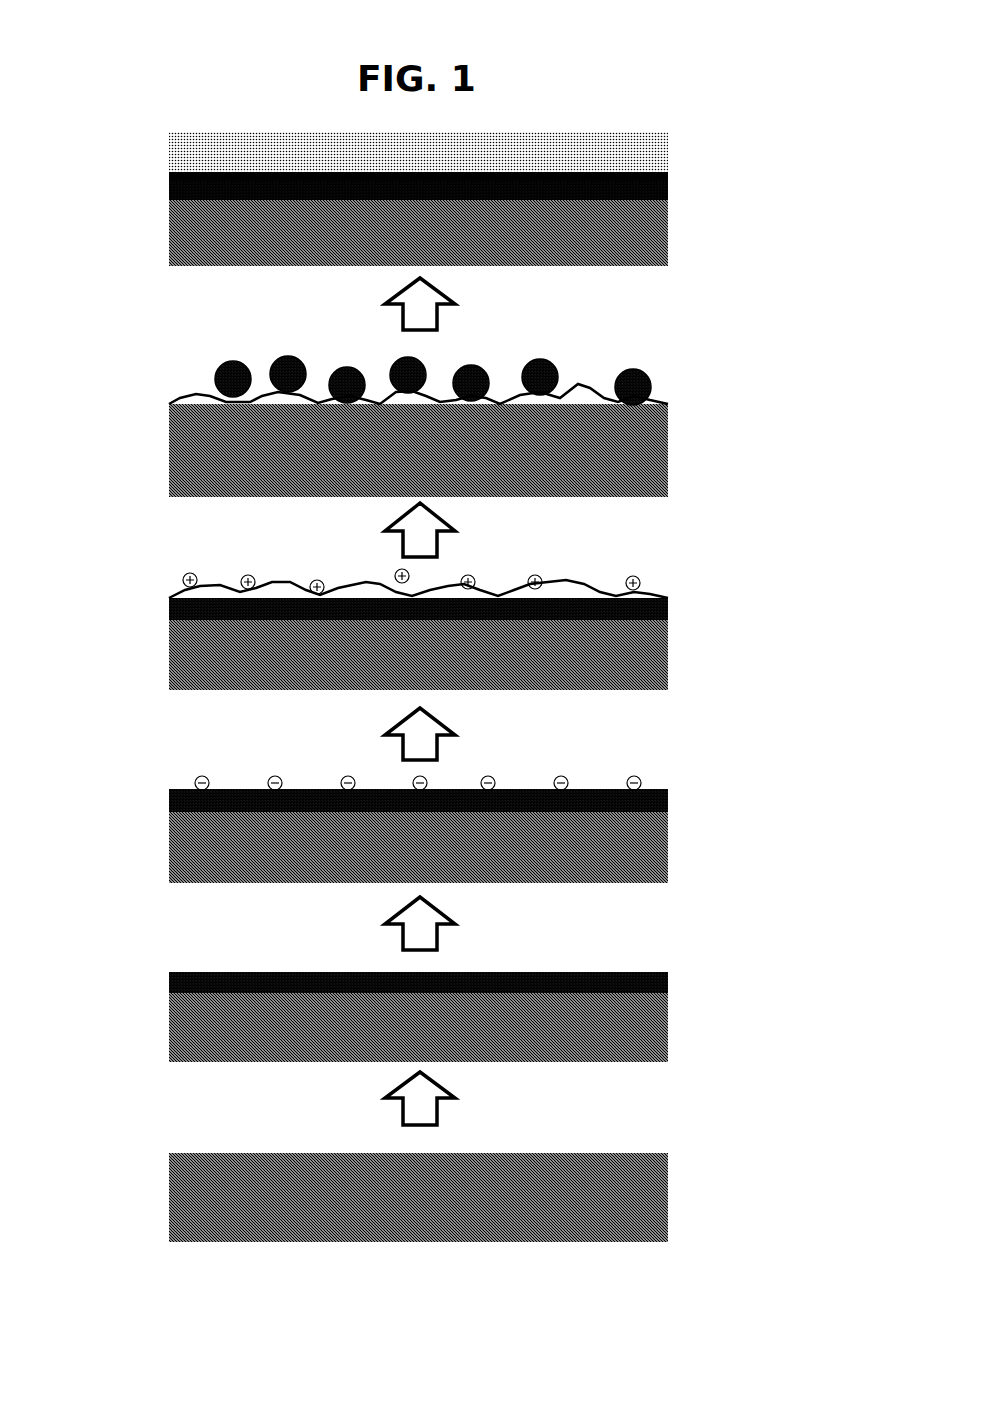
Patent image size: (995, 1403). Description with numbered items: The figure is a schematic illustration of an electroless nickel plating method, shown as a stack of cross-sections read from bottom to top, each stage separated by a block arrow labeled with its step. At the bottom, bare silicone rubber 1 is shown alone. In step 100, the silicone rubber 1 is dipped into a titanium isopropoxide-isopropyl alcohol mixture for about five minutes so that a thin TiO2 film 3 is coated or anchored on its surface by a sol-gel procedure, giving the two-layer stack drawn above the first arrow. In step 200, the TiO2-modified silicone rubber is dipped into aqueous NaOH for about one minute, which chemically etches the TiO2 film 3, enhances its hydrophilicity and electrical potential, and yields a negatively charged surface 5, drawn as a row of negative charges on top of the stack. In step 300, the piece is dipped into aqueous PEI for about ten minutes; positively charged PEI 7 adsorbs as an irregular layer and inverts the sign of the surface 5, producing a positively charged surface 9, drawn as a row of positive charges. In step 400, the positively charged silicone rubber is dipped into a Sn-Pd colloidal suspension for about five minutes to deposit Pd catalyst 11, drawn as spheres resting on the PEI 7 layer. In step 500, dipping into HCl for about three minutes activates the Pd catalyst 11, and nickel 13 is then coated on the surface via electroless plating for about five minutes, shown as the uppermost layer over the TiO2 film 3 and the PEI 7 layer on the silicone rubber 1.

The silicone rubber 1 is at (151, 1192).
The TiO2 film 3 is at (151, 980).
The negatively charged surface 5 is at (668, 779).
The positively charged PEI 7 is at (683, 178).
The positively charged surface 9 is at (661, 583).
The Pd catalyst 11 is at (666, 387).
The nickel 13 is at (151, 145).
The step 100 is at (386, 1098).
The step 200 is at (385, 923).
The step 300 is at (386, 734).
The step 400 is at (385, 530).
The step 500 is at (385, 305).